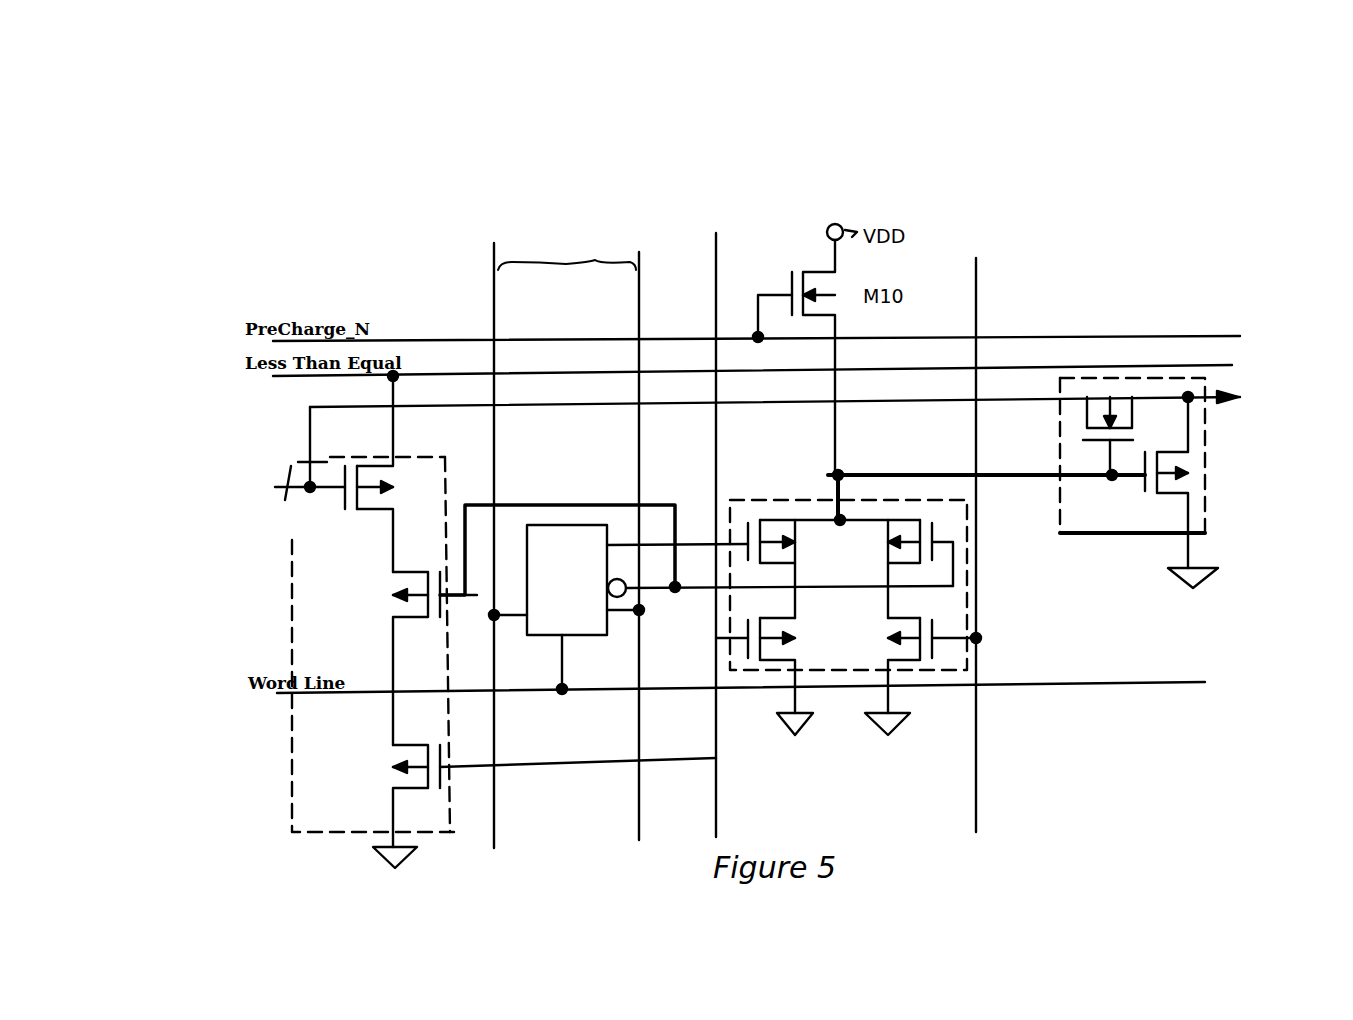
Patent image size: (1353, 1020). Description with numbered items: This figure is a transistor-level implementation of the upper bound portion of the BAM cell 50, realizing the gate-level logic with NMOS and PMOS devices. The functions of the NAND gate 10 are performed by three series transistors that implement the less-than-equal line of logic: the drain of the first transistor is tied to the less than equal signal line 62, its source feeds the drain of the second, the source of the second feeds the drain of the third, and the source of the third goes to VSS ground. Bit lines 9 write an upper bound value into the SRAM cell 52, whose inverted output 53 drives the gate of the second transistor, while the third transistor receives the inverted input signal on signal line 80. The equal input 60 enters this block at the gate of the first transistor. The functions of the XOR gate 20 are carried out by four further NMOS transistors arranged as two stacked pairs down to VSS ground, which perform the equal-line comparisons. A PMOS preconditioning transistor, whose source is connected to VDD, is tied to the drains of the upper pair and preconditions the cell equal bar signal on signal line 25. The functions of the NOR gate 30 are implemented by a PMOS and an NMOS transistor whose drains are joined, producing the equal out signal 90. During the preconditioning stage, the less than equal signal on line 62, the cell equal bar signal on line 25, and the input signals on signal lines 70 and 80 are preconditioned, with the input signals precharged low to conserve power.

The BAM cell 50 is at (953, 137).
The bit lines 9 is at (563, 227).
The NAND gate 10 is at (320, 840).
The XOR gate 20 is at (946, 668).
The cell equal bar signal line 25 is at (880, 470).
The NOR gate 30 is at (1122, 540).
The SRAM cell 52 is at (618, 609).
The SRAM cell inverted output 53 is at (696, 551).
The Equal In input 60 is at (262, 519).
The less than equal signal line 62 is at (1150, 362).
The input signal line 70 is at (716, 281).
The inverted input signal line 80 is at (966, 291).
The Equal Out output 90 is at (1213, 405).